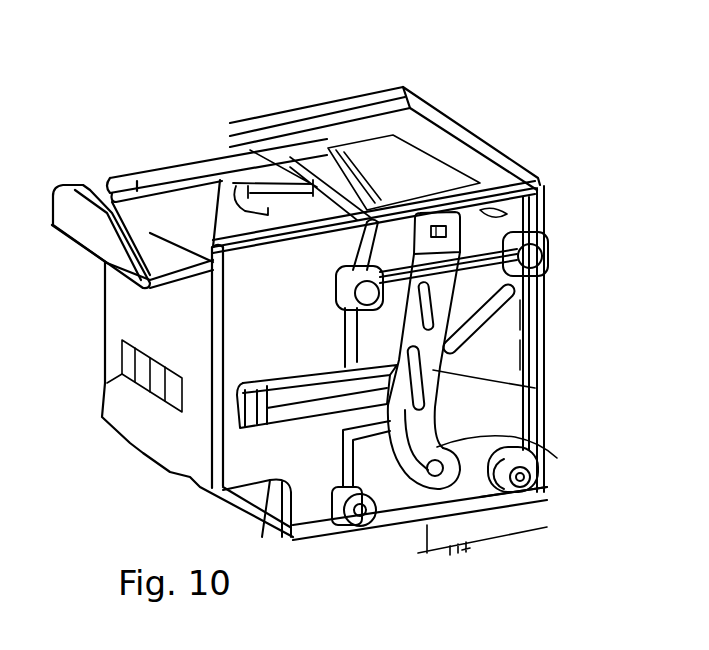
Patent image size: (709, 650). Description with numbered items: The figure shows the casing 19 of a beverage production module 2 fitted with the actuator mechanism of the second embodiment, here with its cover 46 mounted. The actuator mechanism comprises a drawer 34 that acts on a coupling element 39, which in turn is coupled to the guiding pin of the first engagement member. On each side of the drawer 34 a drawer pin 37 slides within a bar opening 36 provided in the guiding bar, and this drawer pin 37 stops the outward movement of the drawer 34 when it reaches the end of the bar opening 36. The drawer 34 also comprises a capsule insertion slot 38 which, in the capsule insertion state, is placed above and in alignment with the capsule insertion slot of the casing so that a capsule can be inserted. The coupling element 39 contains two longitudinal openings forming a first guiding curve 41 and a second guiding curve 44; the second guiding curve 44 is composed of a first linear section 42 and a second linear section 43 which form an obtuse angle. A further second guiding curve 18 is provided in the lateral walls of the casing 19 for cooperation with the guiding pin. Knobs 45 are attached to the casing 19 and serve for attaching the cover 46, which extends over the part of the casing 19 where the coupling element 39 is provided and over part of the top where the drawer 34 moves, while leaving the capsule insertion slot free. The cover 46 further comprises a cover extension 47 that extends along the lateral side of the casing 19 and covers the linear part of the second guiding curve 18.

The beverage production module 2 is at (480, 77).
The drawer 34 is at (143, 213).
The capsule insertion slot 38 is at (250, 180).
The drawer pin 37 is at (422, 207).
The bar opening 36 is at (540, 172).
The knobs 45 is at (548, 236).
The first guiding curve 41 is at (540, 281).
The second linear section 43 is at (547, 403).
The first linear section 42 is at (542, 447).
The second guiding curve 44 is at (655, 403).
The second guiding curve 18 is at (507, 313).
The cover 46 is at (497, 348).
The casing 19 is at (547, 363).
The coupling element 39 is at (468, 482).
The cover extension 47 is at (330, 407).